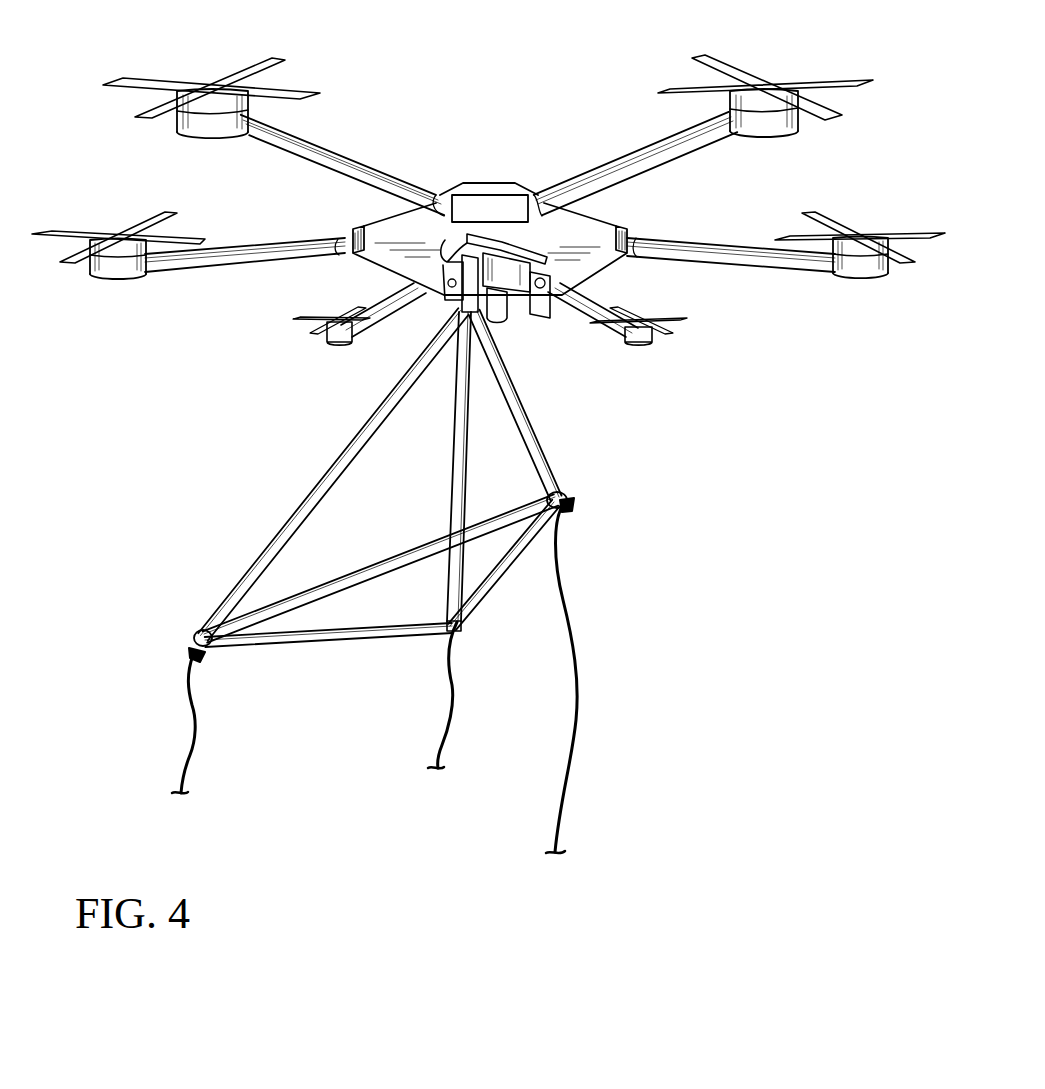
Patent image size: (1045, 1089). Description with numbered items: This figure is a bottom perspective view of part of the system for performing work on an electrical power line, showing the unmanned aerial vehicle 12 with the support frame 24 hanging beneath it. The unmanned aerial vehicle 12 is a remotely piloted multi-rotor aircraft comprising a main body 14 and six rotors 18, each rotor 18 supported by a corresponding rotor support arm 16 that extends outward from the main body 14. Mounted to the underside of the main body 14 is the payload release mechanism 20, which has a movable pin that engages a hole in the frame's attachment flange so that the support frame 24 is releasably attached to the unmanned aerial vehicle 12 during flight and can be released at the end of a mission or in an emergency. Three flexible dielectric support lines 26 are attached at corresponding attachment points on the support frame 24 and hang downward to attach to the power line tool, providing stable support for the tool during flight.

The unmanned aerial vehicle 12 is at (585, 114).
The main body 14 is at (483, 190).
The rotor support arm 16 is at (340, 153).
The rotor 18 is at (240, 68).
The payload release mechanism 20 is at (496, 308).
The support frame 24 is at (535, 433).
The flexible dielectric support line 26 is at (577, 640).